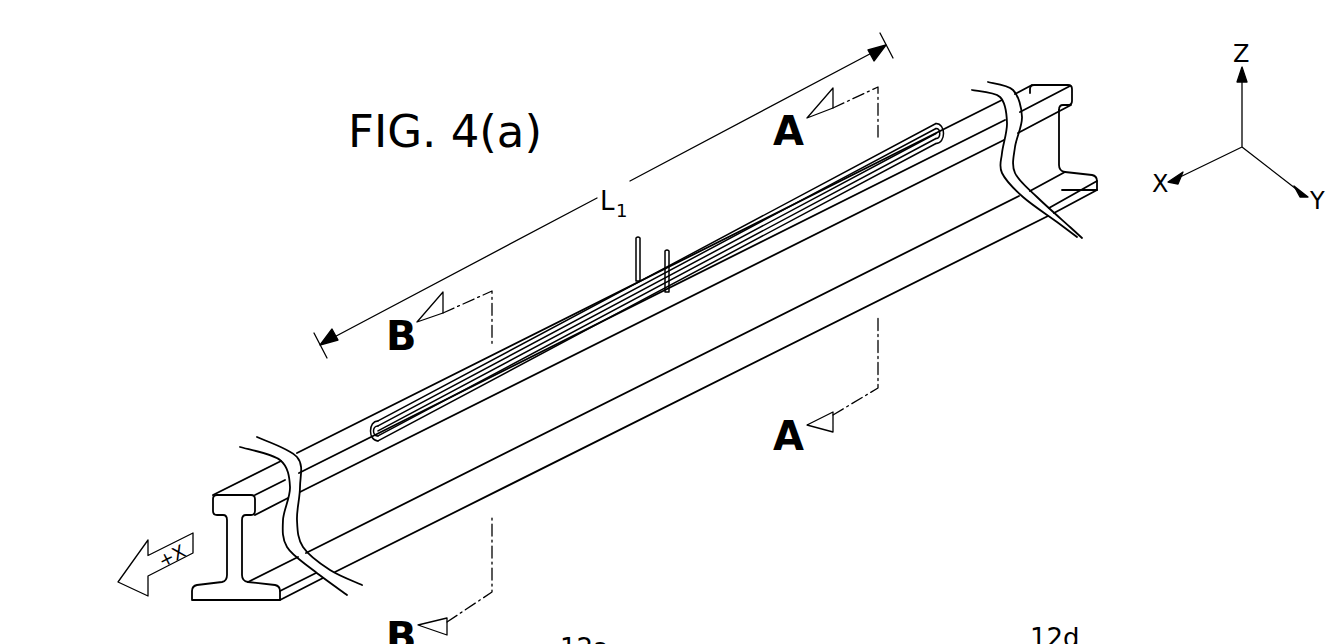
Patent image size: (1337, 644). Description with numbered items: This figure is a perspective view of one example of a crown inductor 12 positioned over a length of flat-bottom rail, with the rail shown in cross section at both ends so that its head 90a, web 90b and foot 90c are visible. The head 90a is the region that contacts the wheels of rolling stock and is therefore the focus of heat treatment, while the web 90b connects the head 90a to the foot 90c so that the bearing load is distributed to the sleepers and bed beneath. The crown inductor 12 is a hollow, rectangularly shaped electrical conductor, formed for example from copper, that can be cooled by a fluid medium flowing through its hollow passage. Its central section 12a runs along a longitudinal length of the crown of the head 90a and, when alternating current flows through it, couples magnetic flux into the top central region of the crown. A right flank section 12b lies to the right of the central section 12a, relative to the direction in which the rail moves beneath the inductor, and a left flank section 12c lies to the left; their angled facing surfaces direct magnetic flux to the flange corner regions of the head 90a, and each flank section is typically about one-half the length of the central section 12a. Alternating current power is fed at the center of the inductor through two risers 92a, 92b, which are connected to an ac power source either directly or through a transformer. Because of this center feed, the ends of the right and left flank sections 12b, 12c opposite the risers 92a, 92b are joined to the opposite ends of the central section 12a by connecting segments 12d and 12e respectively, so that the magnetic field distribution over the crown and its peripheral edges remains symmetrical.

The crown inductor 12 is at (678, 302).
The central section 12a is at (540, 342).
The right flank section 12b is at (810, 188).
The left flank section 12c is at (527, 364).
The connecting segment 12d is at (944, 126).
The connecting segment 12e is at (362, 432).
The head 90a is at (1063, 97).
The web 90b is at (1052, 148).
The foot 90c is at (1065, 192).
The riser 92a is at (638, 237).
The riser 92b is at (668, 250).